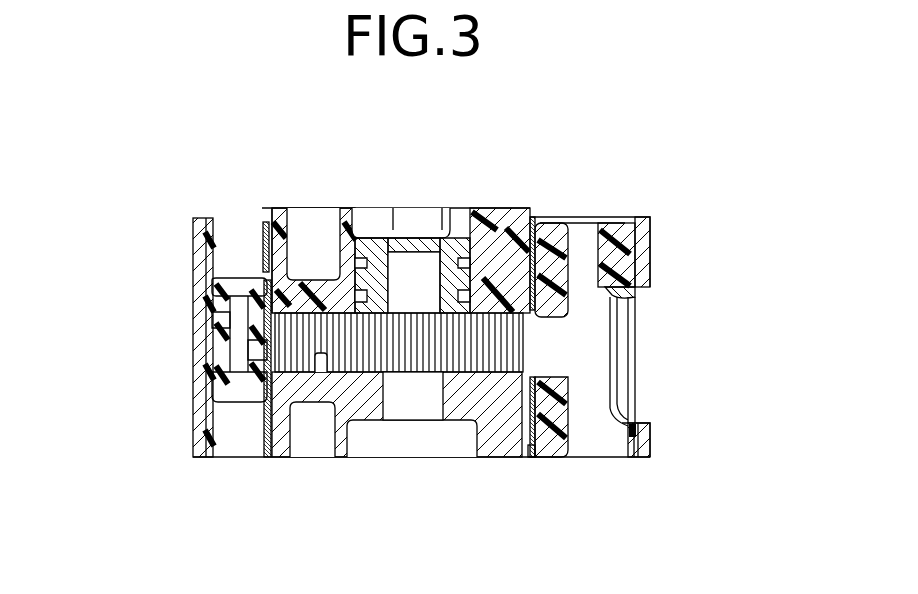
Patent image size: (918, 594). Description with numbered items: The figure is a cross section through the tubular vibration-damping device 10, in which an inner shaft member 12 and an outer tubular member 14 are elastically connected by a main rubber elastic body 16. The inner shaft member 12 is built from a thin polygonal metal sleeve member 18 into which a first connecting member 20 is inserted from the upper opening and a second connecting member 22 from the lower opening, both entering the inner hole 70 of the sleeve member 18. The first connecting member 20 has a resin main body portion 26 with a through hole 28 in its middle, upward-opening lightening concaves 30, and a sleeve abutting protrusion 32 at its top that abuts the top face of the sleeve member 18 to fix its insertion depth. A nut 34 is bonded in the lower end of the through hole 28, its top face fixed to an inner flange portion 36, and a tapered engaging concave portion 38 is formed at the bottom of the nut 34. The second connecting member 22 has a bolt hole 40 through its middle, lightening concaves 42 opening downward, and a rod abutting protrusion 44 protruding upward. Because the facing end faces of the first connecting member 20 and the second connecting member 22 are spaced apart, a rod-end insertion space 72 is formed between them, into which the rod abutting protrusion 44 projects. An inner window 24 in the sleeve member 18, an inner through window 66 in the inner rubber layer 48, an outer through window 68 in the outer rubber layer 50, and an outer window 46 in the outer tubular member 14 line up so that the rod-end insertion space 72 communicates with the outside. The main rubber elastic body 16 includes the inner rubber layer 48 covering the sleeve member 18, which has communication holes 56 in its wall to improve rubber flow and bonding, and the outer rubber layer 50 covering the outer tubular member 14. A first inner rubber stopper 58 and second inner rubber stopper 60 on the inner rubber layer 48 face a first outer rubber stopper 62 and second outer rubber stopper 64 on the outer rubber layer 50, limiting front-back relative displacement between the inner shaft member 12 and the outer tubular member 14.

The tubular vibration-damping device 10 is at (652, 176).
The inner shaft member 12 is at (297, 193).
The outer tubular member 14 is at (188, 253).
The main rubber elastic body 16 is at (571, 447).
The sleeve member 18 is at (266, 440).
The first connecting member 20 is at (493, 201).
The second connecting member 22 is at (479, 461).
The inner window 24 is at (541, 378).
The main body portion 26 is at (512, 207).
The through hole 28 is at (386, 207).
The lightening concaves 30 is at (331, 207).
The sleeve abutting protrusion 32 is at (262, 209).
The nut 34 is at (421, 207).
The inner flange portion 36 is at (452, 207).
The engaging concave portion 38 is at (398, 335).
The bolt hole 40 is at (443, 400).
The lightening concaves 42 is at (323, 430).
The rod abutting protrusion 44 is at (318, 358).
The outer window 46 is at (648, 424).
The inner rubber layer 48 is at (537, 446).
The outer rubber layer 50 is at (634, 431).
The communication holes 56 is at (265, 281).
The first inner rubber stopper 58 is at (252, 351).
The second inner rubber stopper 60 is at (553, 415).
The first outer rubber stopper 62 is at (217, 318).
The second outer rubber stopper 64 is at (622, 243).
The inner through window 66 is at (568, 330).
The outer through window 68 is at (613, 299).
The inner hole 70 is at (531, 449).
The rod-end insertion space 72 is at (528, 346).